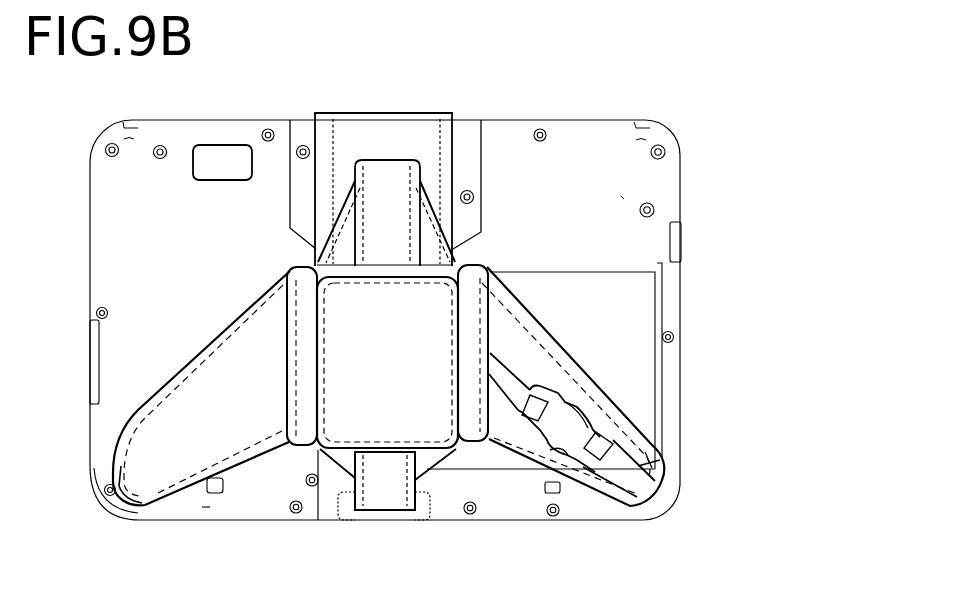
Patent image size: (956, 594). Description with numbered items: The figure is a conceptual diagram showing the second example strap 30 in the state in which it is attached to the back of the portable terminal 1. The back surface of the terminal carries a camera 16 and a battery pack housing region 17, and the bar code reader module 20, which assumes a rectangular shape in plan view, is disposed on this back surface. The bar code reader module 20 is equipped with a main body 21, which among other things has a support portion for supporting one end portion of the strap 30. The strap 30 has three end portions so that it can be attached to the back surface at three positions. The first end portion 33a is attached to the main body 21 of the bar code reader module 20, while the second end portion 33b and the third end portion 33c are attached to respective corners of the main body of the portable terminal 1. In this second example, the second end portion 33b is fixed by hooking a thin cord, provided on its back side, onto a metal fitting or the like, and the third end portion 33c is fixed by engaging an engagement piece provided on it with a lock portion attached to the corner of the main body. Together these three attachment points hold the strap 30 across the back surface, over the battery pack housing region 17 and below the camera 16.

The portable terminal 1 is at (585, 120).
The camera 16 is at (220, 160).
The battery pack housing region 17 is at (623, 378).
The bar code reader module 20 is at (348, 113).
The main body 21 is at (418, 133).
The strap 30 is at (520, 333).
The first end portion 33a is at (375, 177).
The second end portion 33b is at (143, 483).
The third end portion 33c is at (663, 460).